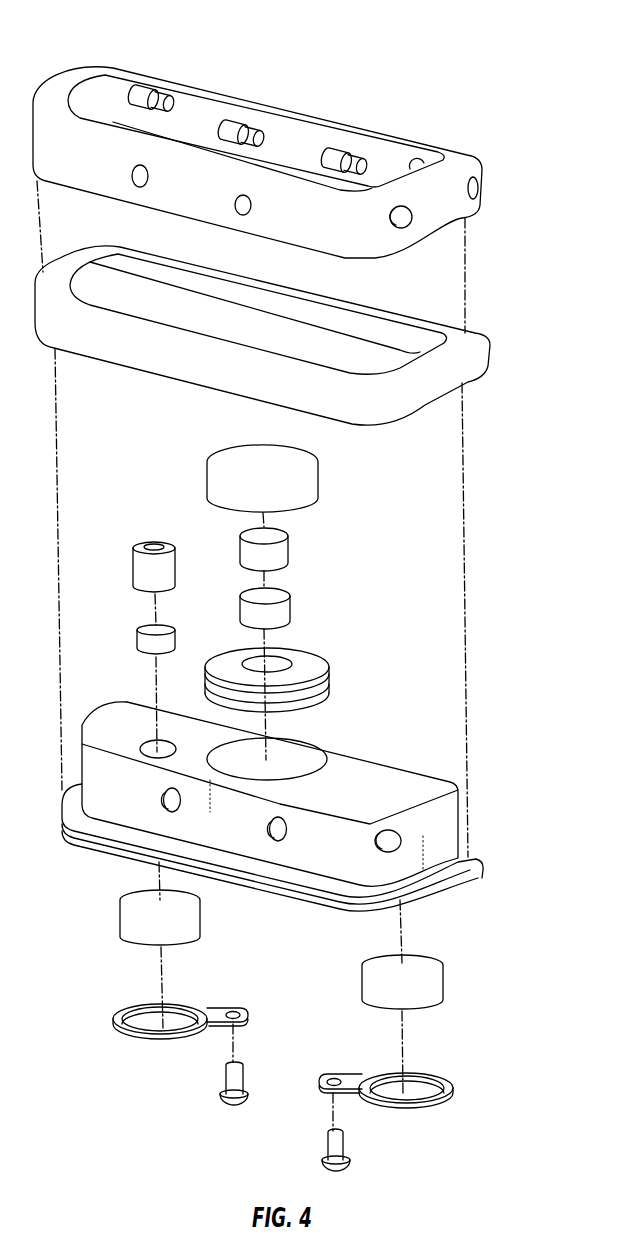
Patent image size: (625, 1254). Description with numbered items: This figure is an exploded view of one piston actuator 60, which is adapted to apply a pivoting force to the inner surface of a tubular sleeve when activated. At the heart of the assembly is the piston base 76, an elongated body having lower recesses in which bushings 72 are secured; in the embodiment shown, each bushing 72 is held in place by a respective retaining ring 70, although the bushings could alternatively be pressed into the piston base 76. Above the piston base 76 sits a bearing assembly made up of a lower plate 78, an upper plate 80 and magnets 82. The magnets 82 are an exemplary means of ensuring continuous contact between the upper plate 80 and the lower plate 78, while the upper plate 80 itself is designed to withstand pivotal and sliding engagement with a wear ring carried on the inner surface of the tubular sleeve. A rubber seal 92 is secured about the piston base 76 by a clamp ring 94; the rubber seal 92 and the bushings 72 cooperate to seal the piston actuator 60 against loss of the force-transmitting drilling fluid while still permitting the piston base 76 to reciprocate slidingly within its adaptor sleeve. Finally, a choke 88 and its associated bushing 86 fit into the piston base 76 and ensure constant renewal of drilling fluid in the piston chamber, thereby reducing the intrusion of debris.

The piston actuator 60 is at (490, 84).
The retaining ring 70 is at (452, 1087).
The bushing 72 is at (443, 970).
The piston base 76 is at (450, 817).
The lower plate 78 is at (329, 676).
The upper plate 80 is at (318, 480).
The magnet 82 is at (290, 551).
The bushing 86 is at (132, 564).
The choke 88 is at (136, 638).
The rubber seal 92 is at (477, 361).
The clamp ring 94 is at (482, 172).